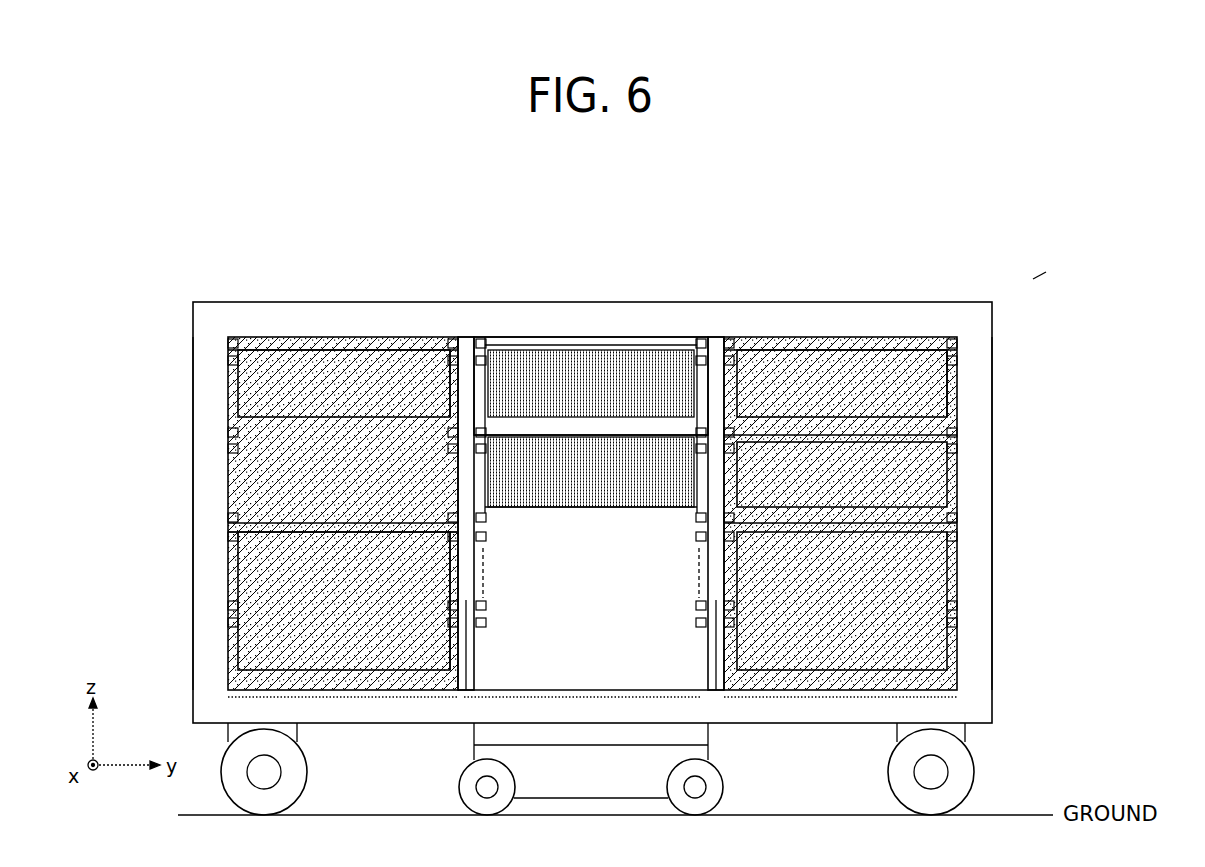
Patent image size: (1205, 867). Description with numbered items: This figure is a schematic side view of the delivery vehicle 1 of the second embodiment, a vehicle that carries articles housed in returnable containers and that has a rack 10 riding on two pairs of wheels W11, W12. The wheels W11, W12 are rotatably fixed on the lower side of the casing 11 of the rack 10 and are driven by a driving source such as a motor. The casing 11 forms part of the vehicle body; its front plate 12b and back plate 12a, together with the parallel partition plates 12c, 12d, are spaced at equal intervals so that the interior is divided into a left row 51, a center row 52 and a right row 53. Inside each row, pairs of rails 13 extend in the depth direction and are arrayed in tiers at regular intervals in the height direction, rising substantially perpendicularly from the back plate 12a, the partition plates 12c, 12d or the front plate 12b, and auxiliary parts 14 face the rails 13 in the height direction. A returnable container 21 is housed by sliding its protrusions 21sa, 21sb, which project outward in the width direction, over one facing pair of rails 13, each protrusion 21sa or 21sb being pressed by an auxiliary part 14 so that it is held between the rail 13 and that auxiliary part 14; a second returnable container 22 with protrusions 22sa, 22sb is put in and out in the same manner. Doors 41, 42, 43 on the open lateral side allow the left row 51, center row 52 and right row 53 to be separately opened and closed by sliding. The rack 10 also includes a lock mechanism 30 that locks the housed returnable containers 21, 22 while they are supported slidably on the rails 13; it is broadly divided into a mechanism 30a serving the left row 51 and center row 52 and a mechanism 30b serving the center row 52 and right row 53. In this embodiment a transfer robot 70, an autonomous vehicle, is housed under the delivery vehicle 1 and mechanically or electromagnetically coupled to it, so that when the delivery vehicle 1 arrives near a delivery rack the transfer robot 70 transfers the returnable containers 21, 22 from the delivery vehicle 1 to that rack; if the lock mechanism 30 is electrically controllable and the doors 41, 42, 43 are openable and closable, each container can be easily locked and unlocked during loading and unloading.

The delivery vehicle 1 is at (1024, 282).
The rack 10 is at (900, 298).
The casing 11 is at (585, 332).
The back plate 12a is at (192, 662).
The front plate 12b is at (972, 604).
The partition plate 12c is at (462, 692).
The partition plate 12d is at (718, 692).
The rails 13 is at (958, 362).
The auxiliary parts 14 is at (958, 345).
The returnable container 21 is at (227, 390).
The protrusion 21sa is at (226, 352).
The protrusion 21sb is at (406, 336).
The returnable container 22 is at (227, 568).
The protrusion 22sa is at (226, 528).
The protrusion 22sb is at (465, 528).
The lock mechanism 30 is at (727, 238).
The mechanism 30a is at (462, 335).
The mechanism 30b is at (714, 335).
The door 41 is at (227, 465).
The door 42 is at (948, 565).
The door 43 is at (842, 601).
The left row 51 is at (343, 710).
The center row 52 is at (583, 710).
The right row 53 is at (840, 710).
The transfer robot 70 is at (729, 775).
The wheels W11 is at (974, 771).
The wheels W12 is at (307, 779).